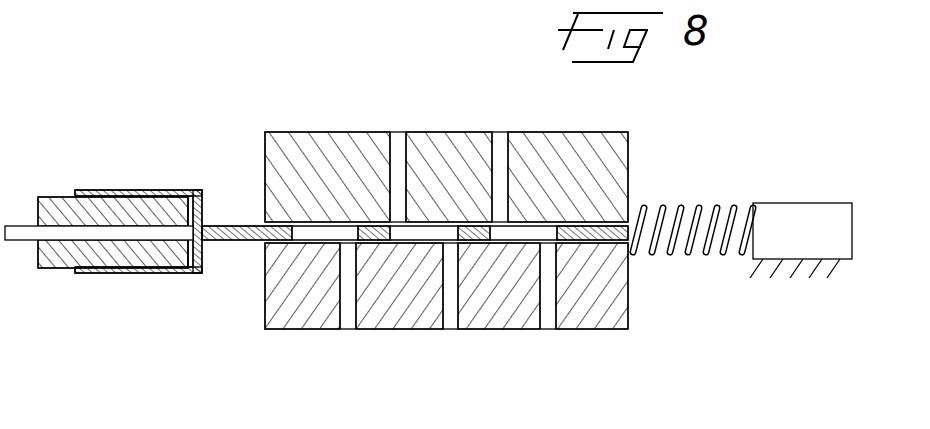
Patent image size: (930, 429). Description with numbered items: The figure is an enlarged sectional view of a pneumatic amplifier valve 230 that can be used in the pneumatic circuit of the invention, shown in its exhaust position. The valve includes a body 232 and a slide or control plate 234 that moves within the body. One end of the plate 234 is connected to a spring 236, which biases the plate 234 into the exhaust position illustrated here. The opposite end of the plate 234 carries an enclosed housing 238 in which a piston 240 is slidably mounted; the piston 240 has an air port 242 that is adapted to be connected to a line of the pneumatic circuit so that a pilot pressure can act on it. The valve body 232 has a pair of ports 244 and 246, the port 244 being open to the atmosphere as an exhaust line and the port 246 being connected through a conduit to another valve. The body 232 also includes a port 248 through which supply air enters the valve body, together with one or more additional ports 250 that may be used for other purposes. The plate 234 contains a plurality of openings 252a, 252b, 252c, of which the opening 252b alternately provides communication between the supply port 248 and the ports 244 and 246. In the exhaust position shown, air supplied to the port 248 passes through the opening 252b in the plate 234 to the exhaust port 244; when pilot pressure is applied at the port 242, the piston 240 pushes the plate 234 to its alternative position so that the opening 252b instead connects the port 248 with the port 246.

The actuator assembly 230 is at (190, 105).
The valve body 232 is at (305, 143).
The slide or control plate 234 is at (234, 232).
The spring 236 is at (732, 210).
The enclosed housing 238 is at (138, 274).
The piston 240 is at (63, 202).
The air port 242 is at (23, 243).
The port 244 is at (397, 143).
The port 246 is at (502, 142).
The port 248 is at (452, 321).
The additional ports 250 is at (348, 321).
The opening 252a is at (322, 236).
The opening 252b is at (428, 233).
The opening 252c is at (547, 235).